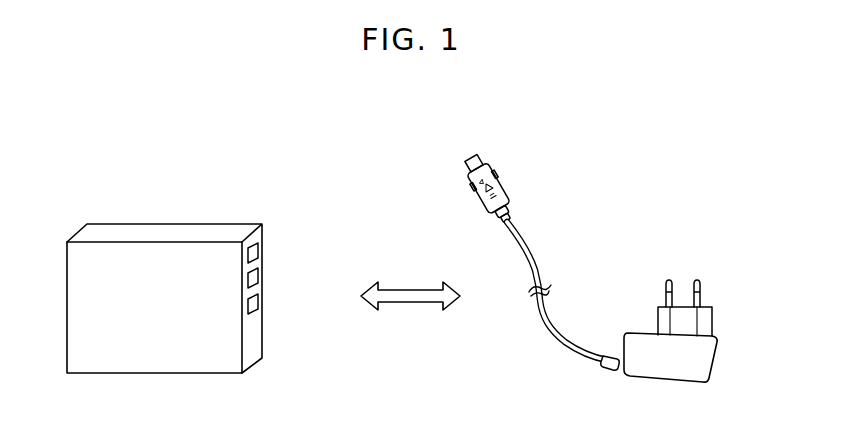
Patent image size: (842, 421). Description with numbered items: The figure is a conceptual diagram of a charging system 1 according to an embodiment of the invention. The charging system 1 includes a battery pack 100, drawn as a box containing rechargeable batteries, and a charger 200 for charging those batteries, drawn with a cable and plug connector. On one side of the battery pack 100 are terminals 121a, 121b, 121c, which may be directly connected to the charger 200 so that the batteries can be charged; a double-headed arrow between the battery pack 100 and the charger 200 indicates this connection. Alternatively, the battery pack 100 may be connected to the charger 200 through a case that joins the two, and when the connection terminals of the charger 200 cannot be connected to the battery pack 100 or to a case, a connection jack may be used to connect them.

The charging system 1 is at (447, 128).
The battery pack 100 is at (198, 268).
The terminal 121a is at (258, 250).
The terminal 121b is at (258, 303).
The terminal 121c is at (258, 277).
The charger 200 is at (645, 216).